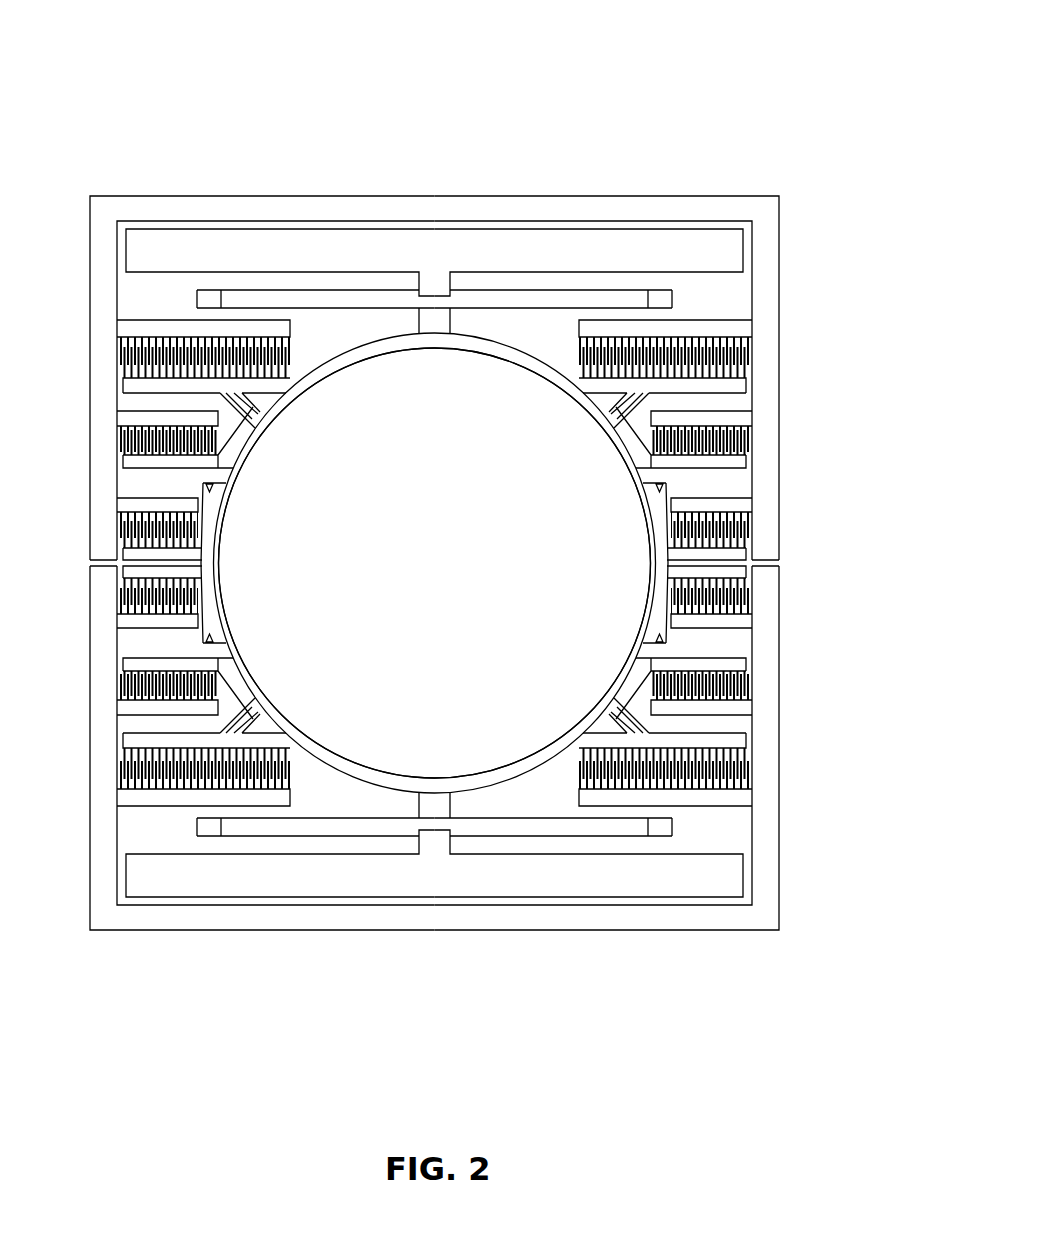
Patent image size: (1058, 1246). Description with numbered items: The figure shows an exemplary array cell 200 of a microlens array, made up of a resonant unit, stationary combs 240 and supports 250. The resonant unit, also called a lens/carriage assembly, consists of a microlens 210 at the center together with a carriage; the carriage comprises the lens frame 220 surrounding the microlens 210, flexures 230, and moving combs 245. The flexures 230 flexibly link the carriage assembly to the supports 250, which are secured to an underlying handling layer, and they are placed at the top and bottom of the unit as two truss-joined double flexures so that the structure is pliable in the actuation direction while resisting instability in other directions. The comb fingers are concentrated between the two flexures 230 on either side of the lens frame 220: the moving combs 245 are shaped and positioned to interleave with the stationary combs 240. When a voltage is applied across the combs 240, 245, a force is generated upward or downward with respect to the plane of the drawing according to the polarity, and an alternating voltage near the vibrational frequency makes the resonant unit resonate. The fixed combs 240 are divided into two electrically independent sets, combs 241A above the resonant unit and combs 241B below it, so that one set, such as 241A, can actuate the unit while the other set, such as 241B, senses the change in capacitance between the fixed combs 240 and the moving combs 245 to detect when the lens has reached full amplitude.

The array cell 200 is at (840, 69).
The microlens 210 is at (455, 576).
The lens frame 220 is at (480, 346).
The flexures 230 is at (541, 290).
The stationary combs 240 is at (698, 343).
The combs above the resonant unit 241A is at (850, 196).
The combs below the resonant unit 241B is at (850, 568).
The moving combs 245 is at (580, 371).
The supports 250 is at (272, 247).